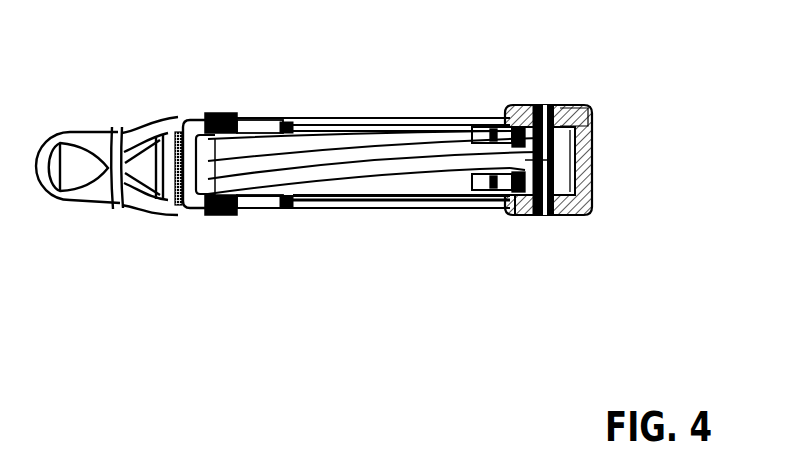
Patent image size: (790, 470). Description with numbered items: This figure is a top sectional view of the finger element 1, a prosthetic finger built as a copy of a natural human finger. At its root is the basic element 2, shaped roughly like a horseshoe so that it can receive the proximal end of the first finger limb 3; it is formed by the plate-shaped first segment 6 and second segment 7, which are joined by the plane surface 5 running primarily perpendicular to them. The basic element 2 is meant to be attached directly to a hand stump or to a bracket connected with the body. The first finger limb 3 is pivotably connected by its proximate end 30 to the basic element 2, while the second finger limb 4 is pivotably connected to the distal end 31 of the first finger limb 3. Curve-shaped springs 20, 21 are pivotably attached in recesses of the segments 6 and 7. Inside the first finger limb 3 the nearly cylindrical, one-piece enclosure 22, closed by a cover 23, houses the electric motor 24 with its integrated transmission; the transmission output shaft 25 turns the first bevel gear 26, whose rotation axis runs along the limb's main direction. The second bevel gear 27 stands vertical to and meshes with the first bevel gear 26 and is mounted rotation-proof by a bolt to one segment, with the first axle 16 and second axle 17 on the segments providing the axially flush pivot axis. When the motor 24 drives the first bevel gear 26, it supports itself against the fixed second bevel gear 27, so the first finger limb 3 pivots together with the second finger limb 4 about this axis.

The finger element 1 is at (342, 214).
The basic element 2 is at (592, 95).
The first finger limb 3 is at (328, 128).
The second finger limb 4 is at (100, 130).
The plane surface 5 is at (593, 139).
The first segment 6 is at (515, 216).
The second segment 7 is at (520, 107).
The first axle 16 is at (553, 216).
The second axle 17 is at (551, 106).
The spring 20 is at (252, 212).
The spring 21 is at (258, 128).
The enclosure 22 is at (426, 205).
The cover 23 is at (189, 121).
The electric motor 24 is at (287, 180).
The transmission output shaft 25 is at (547, 163).
The first bevel gear 26 is at (505, 127).
The second bevel gear 27 is at (590, 118).
The proximate end 30 is at (505, 207).
The distal end 31 is at (190, 210).